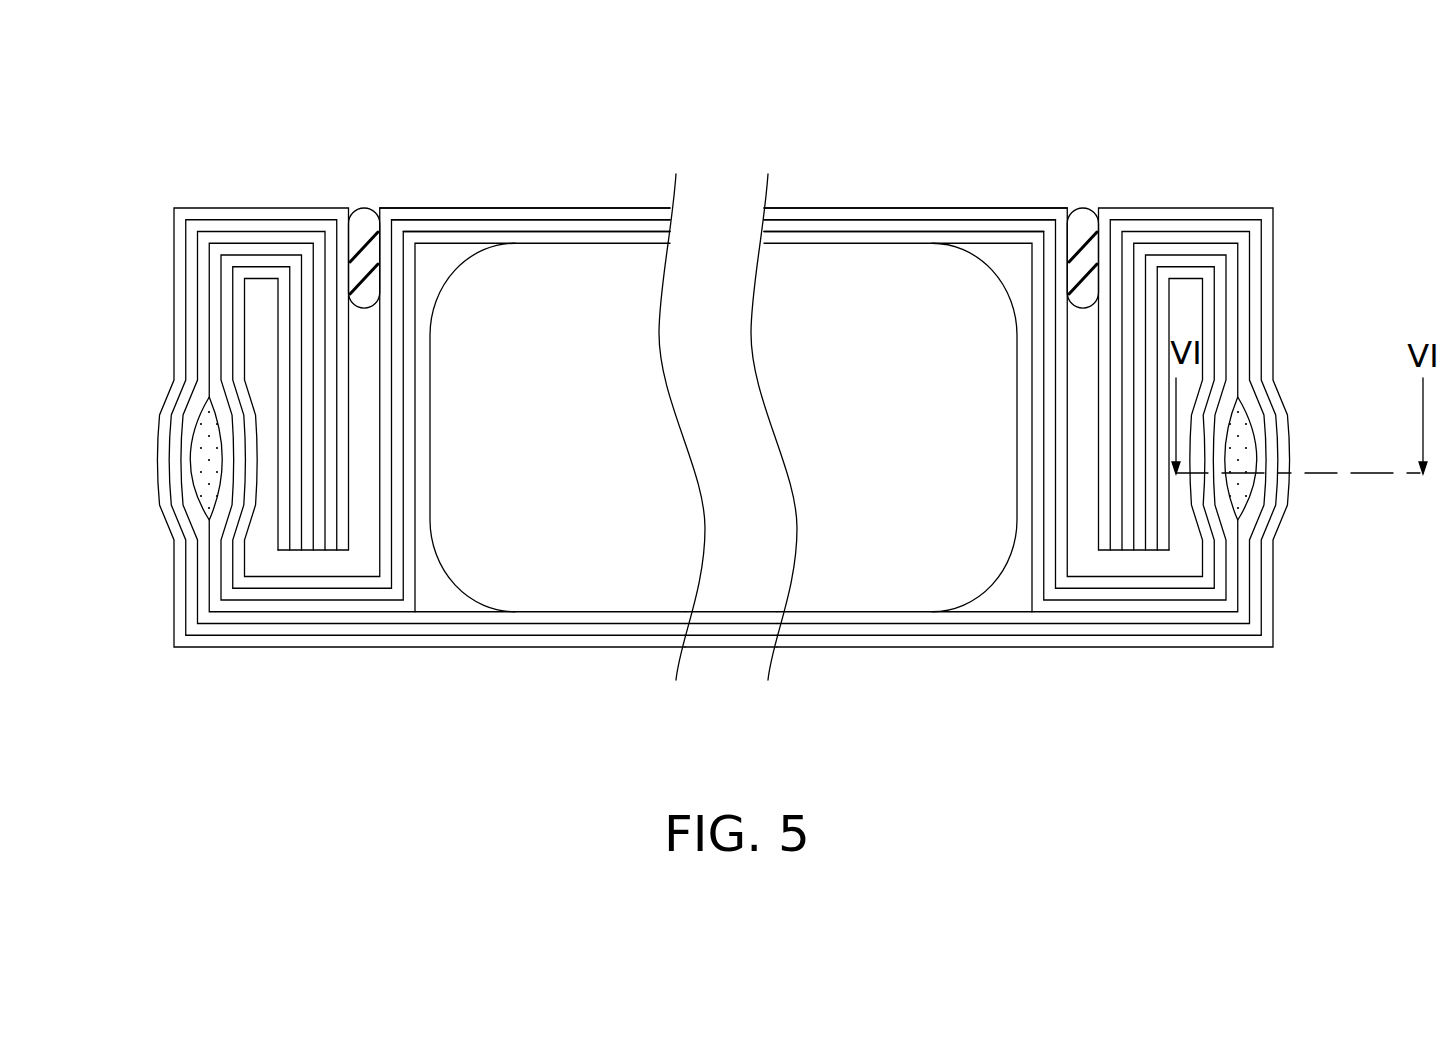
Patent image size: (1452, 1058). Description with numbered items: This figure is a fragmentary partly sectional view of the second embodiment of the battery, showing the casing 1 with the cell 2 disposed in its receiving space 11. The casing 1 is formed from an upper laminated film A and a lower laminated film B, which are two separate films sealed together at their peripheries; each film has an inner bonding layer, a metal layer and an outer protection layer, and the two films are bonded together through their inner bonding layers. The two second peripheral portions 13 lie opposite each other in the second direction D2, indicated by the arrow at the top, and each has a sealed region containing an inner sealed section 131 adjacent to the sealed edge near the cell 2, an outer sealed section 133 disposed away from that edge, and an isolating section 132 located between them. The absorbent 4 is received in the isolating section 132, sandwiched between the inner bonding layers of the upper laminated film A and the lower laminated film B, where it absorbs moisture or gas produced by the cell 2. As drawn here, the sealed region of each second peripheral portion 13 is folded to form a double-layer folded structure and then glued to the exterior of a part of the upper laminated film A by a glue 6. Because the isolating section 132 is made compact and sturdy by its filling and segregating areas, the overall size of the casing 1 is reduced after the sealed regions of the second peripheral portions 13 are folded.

The casing 1 is at (1234, 153).
The cell 2 is at (573, 300).
The absorbent 4 is at (197, 487).
The glue 6 is at (368, 222).
The receiving space 11 is at (971, 210).
The second peripheral portion 13 is at (166, 256).
The inner sealed section 131 is at (183, 598).
The isolating section 132 is at (174, 437).
The outer sealed section 133 is at (183, 350).
The upper laminated film A is at (857, 210).
The lower laminated film B is at (870, 648).
The second direction D2 is at (676, 62).